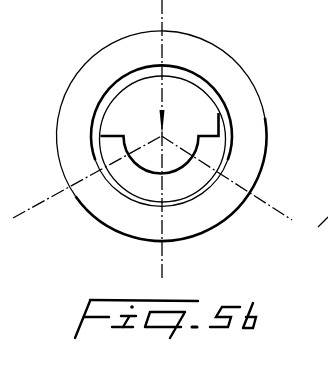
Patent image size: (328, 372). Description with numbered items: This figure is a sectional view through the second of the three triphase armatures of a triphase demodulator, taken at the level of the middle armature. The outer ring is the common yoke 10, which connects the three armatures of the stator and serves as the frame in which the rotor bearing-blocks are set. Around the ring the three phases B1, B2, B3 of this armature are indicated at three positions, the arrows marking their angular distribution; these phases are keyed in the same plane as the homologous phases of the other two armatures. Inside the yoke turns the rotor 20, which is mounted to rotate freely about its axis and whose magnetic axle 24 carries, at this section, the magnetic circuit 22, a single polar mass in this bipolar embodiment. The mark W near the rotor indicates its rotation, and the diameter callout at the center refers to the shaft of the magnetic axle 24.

The common yoke 10 is at (98, 63).
The rotor 20 is at (146, 171).
The magnetic circuit 22 is at (204, 122).
The magnetic axle 24 is at (170, 167).
The phase B1 is at (172, 52).
The phase B2 is at (93, 193).
The phase B3 is at (242, 170).
The angular velocity W is at (148, 93).